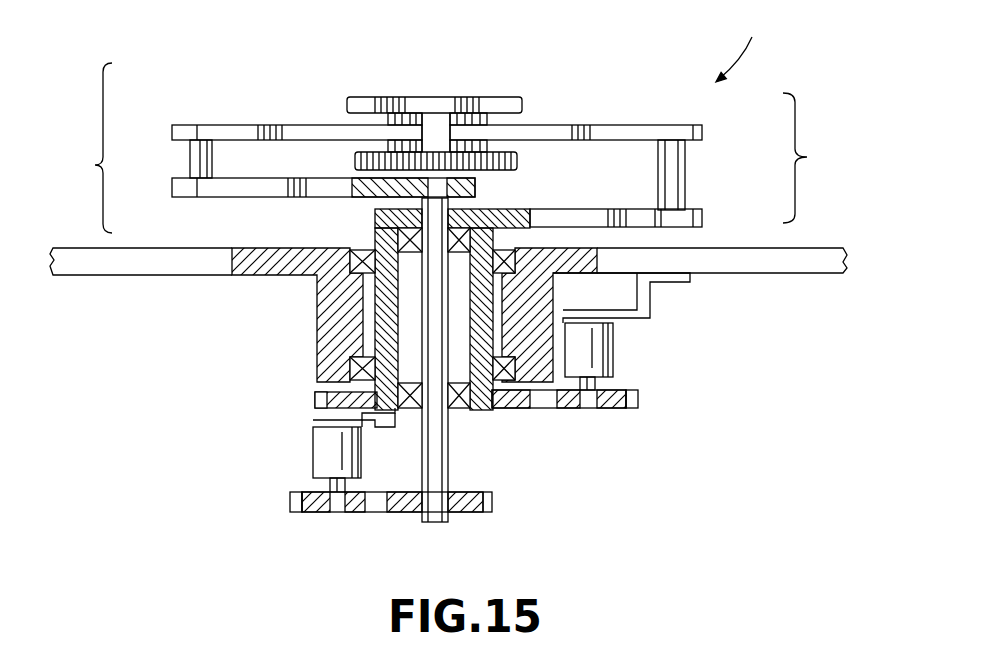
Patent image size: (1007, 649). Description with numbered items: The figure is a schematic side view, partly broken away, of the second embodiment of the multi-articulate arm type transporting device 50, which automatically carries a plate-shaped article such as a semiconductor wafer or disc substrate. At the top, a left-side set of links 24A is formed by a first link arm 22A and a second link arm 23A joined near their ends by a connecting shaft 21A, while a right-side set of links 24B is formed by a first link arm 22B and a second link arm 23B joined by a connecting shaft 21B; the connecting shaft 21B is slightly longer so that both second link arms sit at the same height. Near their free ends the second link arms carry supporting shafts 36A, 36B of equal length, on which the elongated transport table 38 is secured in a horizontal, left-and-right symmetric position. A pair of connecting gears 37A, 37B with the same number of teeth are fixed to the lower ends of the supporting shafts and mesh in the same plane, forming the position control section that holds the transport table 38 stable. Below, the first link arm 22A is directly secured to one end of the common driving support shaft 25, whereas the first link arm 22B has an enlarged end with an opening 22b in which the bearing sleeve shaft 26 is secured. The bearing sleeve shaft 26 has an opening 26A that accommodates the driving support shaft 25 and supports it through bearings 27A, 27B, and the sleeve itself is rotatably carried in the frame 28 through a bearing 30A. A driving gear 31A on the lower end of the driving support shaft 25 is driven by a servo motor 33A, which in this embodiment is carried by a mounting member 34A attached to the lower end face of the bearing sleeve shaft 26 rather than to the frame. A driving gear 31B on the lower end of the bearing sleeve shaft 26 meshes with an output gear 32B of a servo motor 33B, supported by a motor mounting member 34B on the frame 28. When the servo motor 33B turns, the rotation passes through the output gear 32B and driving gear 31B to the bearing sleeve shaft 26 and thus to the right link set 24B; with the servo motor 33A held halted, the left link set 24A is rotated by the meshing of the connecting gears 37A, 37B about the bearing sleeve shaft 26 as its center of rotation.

The multi-articulate arm type transporting device 50 is at (792, 27).
The left-side set of links 24A is at (92, 181).
The right-side set of links 24B is at (868, 172).
The second link arm 23A is at (217, 128).
The connecting shaft 21A is at (197, 162).
The first link arm 22A is at (217, 188).
The opening 22b is at (453, 205).
The transport table 38 is at (427, 105).
The supporting shaft 36A is at (388, 118).
The supporting shaft 36B is at (487, 118).
The connecting gear 37A is at (353, 165).
The connecting gear 37B is at (520, 158).
The second link arm 23B is at (690, 128).
The connecting shaft 21B is at (673, 165).
The first link arm 22B is at (665, 227).
The bearing 30A is at (547, 238).
The frame 28 is at (807, 260).
The bearing sleeve shaft 26 is at (515, 300).
The opening 26A is at (470, 400).
The driving support shaft 25 is at (442, 520).
The bearing 27A is at (395, 240).
The bearing 27B is at (460, 410).
The mounting member 34A is at (335, 422).
The servo motor 33A is at (323, 460).
The driving gear 31A is at (398, 505).
The output gear 32B is at (315, 507).
The motor mounting member 34B is at (642, 315).
The servo motor 33B is at (600, 363).
The driving gear 31B is at (527, 405).